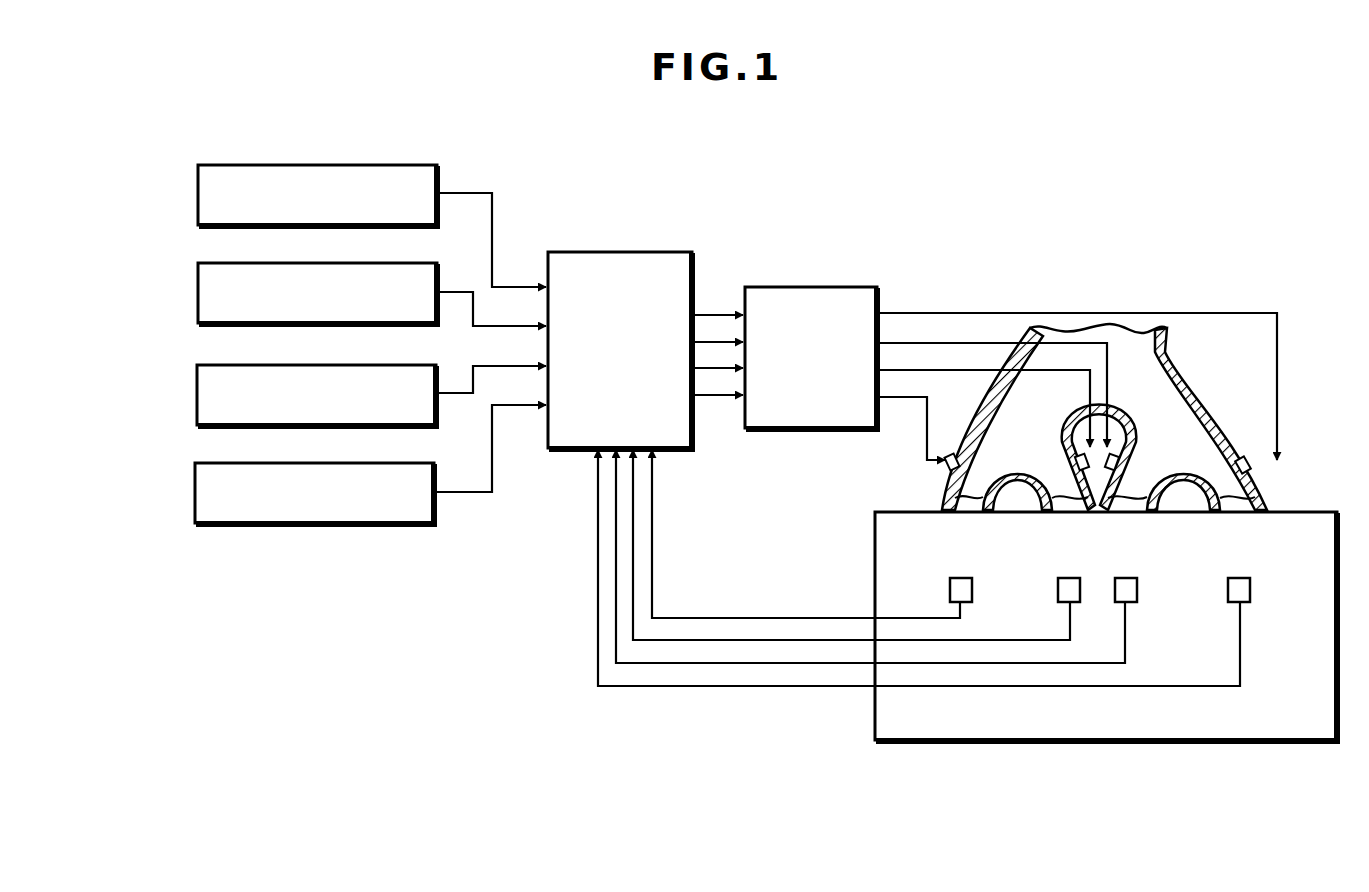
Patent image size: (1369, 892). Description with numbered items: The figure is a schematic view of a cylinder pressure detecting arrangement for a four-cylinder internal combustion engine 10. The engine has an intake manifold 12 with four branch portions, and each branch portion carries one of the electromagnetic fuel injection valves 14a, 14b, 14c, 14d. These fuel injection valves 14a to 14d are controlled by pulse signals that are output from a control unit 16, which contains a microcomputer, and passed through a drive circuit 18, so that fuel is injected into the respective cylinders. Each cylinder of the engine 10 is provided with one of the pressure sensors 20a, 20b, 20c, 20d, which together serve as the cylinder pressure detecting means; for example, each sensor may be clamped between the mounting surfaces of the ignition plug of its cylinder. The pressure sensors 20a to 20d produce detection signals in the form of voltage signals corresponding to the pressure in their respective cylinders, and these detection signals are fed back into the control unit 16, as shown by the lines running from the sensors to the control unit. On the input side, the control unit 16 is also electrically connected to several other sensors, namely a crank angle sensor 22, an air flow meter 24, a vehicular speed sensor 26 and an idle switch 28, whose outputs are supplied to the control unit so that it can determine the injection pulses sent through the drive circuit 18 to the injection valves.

The internal combustion engine 10 is at (872, 724).
The intake manifold 12 is at (1202, 388).
The electromagnetic fuel injection valve 14a is at (946, 468).
The electromagnetic fuel injection valve 14b is at (1076, 462).
The electromagnetic fuel injection valve 14c is at (1120, 462).
The electromagnetic fuel injection valve 14d is at (1256, 470).
The control unit 16 is at (656, 252).
The drive circuit 18 is at (826, 287).
The pressure sensor 20a is at (950, 596).
The pressure sensor 20b is at (1058, 596).
The pressure sensor 20c is at (1137, 592).
The pressure sensor 20d is at (1250, 592).
The crank angle sensor 22 is at (198, 192).
The air flow meter 24 is at (198, 288).
The vehicular speed sensor 26 is at (197, 392).
The idle switch 28 is at (195, 490).